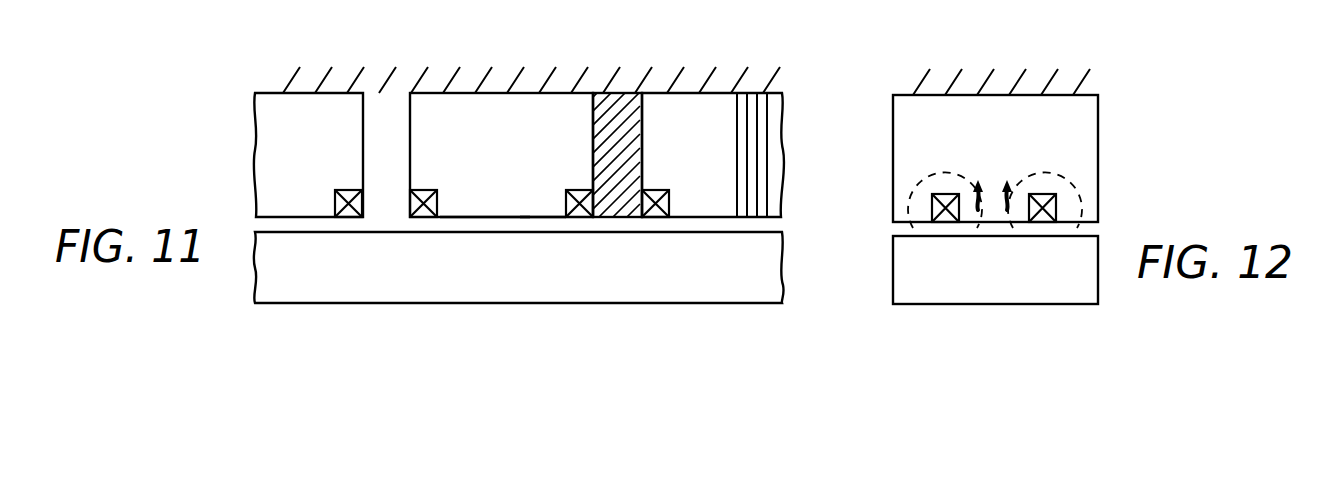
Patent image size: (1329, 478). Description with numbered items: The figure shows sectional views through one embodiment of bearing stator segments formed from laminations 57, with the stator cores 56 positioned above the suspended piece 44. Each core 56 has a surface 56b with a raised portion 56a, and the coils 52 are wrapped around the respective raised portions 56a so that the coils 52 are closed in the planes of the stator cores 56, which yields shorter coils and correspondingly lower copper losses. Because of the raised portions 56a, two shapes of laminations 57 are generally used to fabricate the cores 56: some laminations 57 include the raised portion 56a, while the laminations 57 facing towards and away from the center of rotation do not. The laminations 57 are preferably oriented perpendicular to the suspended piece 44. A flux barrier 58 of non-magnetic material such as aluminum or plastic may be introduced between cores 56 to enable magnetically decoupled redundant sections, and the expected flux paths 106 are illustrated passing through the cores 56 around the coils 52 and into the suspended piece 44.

In FIG. 11, the suspended piece 44 is at (384, 279).
In FIG. 12, the suspended piece 44 is at (961, 277).
In FIG. 11, the coils 52 is at (336, 201).
In FIG. 12, the coils 52 is at (1042, 193).
In FIG. 11, the core 56 is at (318, 131).
In FIG. 12, the core 56 is at (933, 131).
In FIG. 11, the raised portion 56a is at (530, 207).
In FIG. 11, the surface 56b is at (485, 218).
In FIG. 11, the laminations 57 is at (757, 93).
In FIG. 11, the flux barrier 58 is at (553, 103).
In FIG. 12, the flux paths 106 is at (1068, 226).